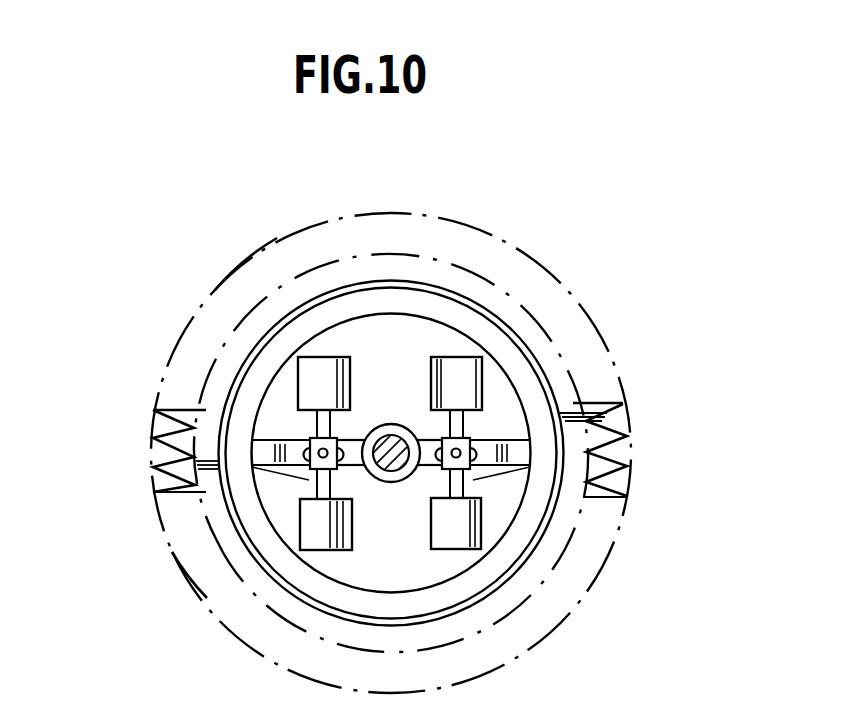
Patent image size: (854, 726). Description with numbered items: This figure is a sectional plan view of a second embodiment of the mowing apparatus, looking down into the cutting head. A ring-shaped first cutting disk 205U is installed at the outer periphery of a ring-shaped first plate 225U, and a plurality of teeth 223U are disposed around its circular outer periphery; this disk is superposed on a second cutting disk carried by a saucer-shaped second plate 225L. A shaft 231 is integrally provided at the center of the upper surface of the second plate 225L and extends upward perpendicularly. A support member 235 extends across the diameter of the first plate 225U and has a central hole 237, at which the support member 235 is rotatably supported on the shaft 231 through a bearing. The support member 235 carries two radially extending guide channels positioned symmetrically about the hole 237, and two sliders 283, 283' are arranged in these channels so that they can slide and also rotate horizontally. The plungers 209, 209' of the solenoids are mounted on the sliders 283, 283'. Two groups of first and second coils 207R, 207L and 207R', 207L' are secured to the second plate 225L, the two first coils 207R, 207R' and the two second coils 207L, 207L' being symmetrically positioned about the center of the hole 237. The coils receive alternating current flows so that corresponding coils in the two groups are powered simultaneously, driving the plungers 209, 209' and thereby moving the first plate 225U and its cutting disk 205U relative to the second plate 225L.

The first coil 207R is at (303, 290).
The second coil 207L is at (242, 579).
The second coil 207L' is at (535, 318).
The first coil 207R' is at (519, 595).
The shaft 231 is at (389, 437).
The support member 235 is at (490, 447).
The hole 237 is at (393, 468).
The first plate 225U is at (263, 360).
The second plate 225L is at (380, 565).
The first cutting disk 205U is at (195, 425).
The teeth 223U is at (192, 465).
The slider 283 is at (211, 492).
The slider 283' is at (560, 490).
The plunger 209 is at (212, 497).
The plunger 209' is at (565, 516).